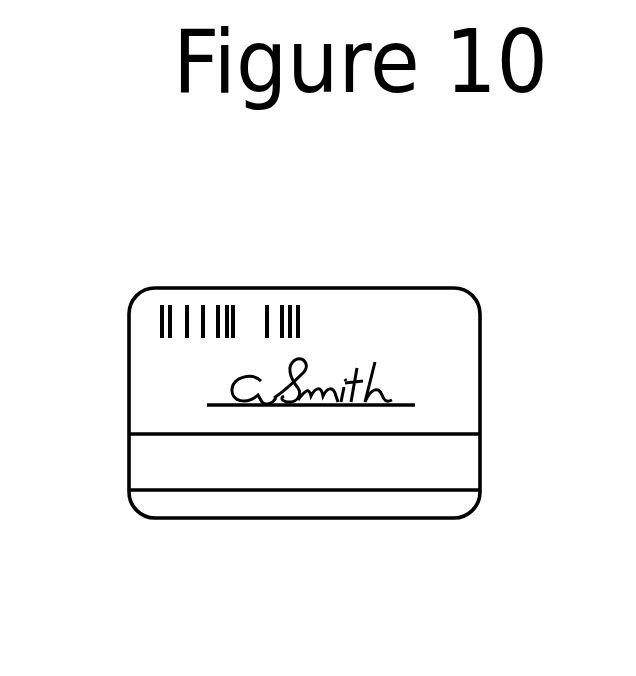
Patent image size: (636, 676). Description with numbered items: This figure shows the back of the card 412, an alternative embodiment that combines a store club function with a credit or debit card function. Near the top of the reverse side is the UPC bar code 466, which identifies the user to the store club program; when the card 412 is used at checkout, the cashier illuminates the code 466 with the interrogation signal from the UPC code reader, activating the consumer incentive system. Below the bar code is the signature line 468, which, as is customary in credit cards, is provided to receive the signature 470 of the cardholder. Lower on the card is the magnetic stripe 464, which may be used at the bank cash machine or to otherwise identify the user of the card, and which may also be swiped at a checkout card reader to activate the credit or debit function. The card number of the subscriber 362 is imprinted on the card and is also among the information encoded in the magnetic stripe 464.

The card 412 is at (362, 518).
The card number of the subscriber 362 is at (230, 478).
The magnetic stripe 464 is at (265, 490).
The UPC bar code 466 is at (200, 302).
The signature line 468 is at (398, 400).
The signature 470 is at (230, 387).